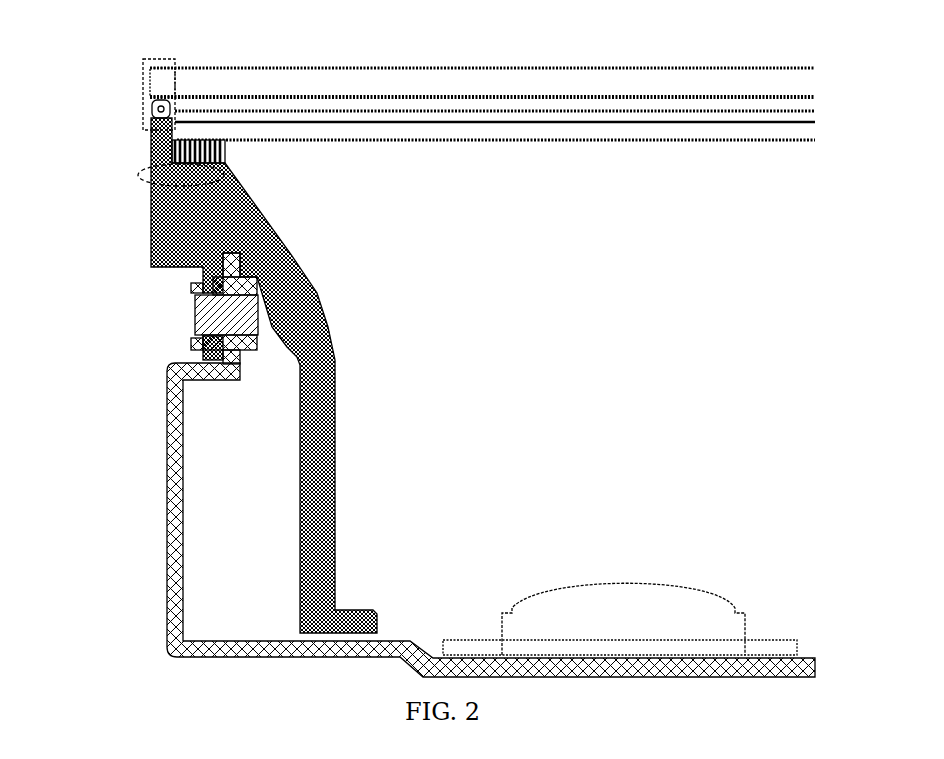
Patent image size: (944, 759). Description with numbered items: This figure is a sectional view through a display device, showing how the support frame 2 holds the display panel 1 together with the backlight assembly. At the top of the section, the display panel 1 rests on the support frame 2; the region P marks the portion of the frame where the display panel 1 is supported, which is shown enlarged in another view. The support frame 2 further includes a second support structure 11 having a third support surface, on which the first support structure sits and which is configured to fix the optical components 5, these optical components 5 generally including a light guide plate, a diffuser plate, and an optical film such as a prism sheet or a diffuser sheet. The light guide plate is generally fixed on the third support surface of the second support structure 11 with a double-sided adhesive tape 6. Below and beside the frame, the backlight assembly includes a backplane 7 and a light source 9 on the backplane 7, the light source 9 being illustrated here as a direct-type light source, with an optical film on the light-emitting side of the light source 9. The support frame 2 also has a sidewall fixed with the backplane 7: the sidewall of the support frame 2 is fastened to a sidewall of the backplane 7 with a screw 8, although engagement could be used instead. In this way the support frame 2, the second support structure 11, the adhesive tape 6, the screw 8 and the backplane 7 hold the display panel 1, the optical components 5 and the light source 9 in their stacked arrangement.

The region P is at (143, 88).
The display panel 1 is at (255, 73).
The optical components 5 is at (412, 131).
The double-sided adhesive tape 6 is at (228, 154).
The support frame 2 is at (172, 247).
The screw 8 is at (205, 313).
The backplane 7 is at (172, 462).
The light source 9 is at (552, 585).
The second support structure 11 is at (137, 175).